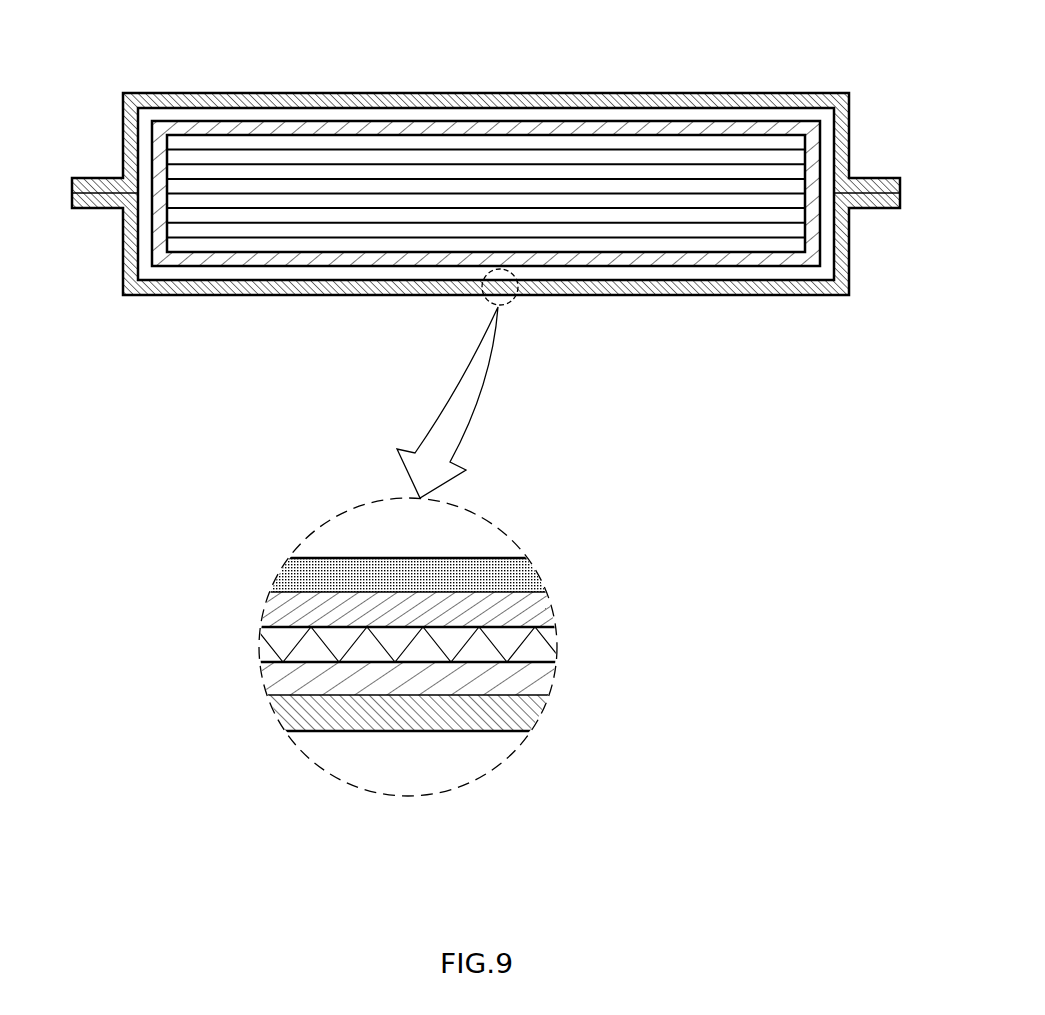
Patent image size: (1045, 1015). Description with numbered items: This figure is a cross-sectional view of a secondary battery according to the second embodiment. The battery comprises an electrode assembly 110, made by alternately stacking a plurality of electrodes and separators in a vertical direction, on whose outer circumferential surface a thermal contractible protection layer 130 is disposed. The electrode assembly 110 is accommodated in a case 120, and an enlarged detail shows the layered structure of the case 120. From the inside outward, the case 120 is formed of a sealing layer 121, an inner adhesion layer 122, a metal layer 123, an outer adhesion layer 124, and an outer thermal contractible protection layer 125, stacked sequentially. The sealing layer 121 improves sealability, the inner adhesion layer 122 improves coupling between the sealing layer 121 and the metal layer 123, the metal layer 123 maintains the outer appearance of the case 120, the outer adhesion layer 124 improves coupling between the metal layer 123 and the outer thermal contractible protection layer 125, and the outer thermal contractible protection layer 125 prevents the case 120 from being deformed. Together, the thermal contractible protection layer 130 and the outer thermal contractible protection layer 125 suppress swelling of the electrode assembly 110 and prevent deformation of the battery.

The electrode assembly 110 is at (575, 132).
The case 120 is at (483, 644).
The sealing layer 121 is at (528, 570).
The inner adhesion layer 122 is at (547, 605).
The metal layer 123 is at (552, 643).
The outer adhesion layer 124 is at (542, 680).
The outer thermal contractible protection layer 125 is at (533, 717).
The thermal contractible protection layer 130 is at (695, 130).